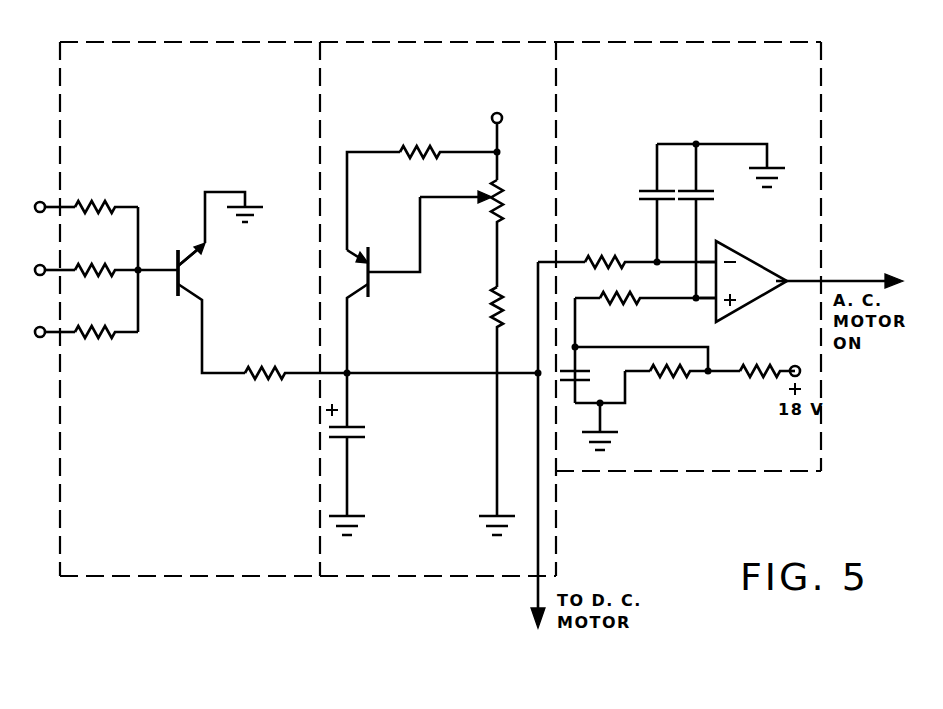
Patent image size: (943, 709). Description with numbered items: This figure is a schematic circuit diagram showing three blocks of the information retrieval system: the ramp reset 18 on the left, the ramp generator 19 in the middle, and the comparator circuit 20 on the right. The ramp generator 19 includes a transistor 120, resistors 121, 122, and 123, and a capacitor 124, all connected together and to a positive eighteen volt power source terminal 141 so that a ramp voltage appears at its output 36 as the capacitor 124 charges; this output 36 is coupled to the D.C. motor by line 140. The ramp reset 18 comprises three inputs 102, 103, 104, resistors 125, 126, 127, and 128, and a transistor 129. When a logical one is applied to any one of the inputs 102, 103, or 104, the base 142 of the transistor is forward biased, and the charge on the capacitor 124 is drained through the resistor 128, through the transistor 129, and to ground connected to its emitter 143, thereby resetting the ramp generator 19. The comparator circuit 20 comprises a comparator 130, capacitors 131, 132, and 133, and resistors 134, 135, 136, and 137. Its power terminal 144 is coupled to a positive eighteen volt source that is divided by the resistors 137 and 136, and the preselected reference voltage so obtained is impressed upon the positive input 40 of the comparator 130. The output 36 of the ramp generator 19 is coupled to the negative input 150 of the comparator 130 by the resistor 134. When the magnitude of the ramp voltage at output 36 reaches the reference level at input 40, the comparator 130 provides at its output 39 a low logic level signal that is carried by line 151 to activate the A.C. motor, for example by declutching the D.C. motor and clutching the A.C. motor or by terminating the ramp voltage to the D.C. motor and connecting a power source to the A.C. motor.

The ramp reset 18 is at (250, 50).
The ramp generator 19 is at (488, 50).
The comparator circuit 20 is at (753, 50).
The output 36 is at (350, 370).
The output 39 is at (786, 278).
The positive input 40 is at (716, 300).
The input 102 is at (40, 201).
The input 103 is at (40, 264).
The input 104 is at (40, 326).
The transistor 120 is at (350, 280).
The resistor 121 is at (420, 162).
The resistor 122 is at (500, 200).
The resistor 123 is at (490, 308).
The capacitor 124 is at (354, 424).
The resistor 125 is at (98, 218).
The resistor 126 is at (92, 280).
The resistor 127 is at (86, 342).
The resistor 128 is at (258, 382).
The transistor 129 is at (188, 272).
The comparator 130 is at (748, 290).
The capacitor 131 is at (654, 188).
The capacitor 132 is at (722, 186).
The capacitor 133 is at (580, 372).
The resistor 134 is at (604, 270).
The resistor 135 is at (640, 300).
The resistor 136 is at (666, 380).
The resistor 137 is at (758, 348).
The line 140 is at (536, 560).
The power source terminal 141 is at (500, 124).
The base 142 is at (176, 267).
The emitter 143 is at (204, 240).
The power terminal 144 is at (788, 380).
The negative input 150 is at (712, 262).
The line 151 is at (806, 280).